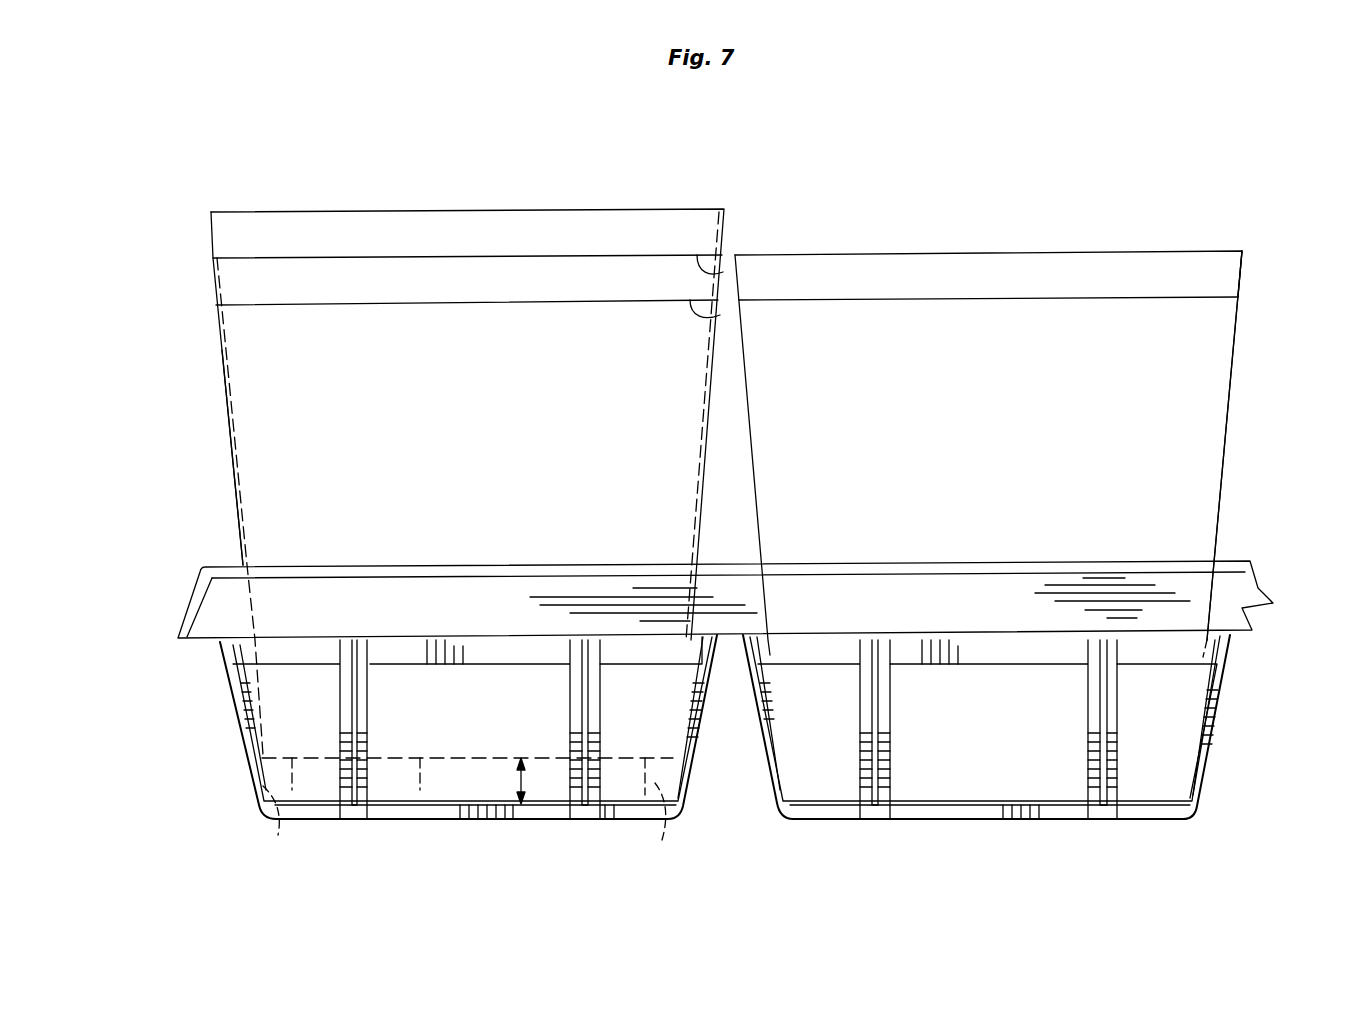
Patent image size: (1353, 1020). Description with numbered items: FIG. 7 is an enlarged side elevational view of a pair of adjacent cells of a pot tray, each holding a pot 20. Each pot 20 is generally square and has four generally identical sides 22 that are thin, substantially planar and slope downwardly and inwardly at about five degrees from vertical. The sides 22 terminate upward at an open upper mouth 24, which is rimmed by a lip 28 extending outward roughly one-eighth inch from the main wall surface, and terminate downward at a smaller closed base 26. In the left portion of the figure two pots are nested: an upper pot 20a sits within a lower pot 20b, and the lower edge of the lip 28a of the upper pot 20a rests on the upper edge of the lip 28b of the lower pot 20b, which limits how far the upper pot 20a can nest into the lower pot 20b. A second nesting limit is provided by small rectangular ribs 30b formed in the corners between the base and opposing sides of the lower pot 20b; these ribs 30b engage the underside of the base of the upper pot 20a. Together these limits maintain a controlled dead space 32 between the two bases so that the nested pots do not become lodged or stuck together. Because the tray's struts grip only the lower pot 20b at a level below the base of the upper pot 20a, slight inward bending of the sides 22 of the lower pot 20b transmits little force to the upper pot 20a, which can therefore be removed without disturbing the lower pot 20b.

The pot 20 is at (1064, 218).
The upper pot 20a is at (222, 196).
The lower pot 20b is at (218, 485).
The side 22 is at (1227, 407).
The open upper mouth 24 is at (950, 238).
The base 26 is at (420, 790).
The lip 28 is at (718, 316).
The lip of upper pot 28a is at (505, 214).
The lip of lower pot 28b is at (275, 385).
The ribs of lower pot 30b is at (278, 835).
The dead space 32 is at (523, 778).